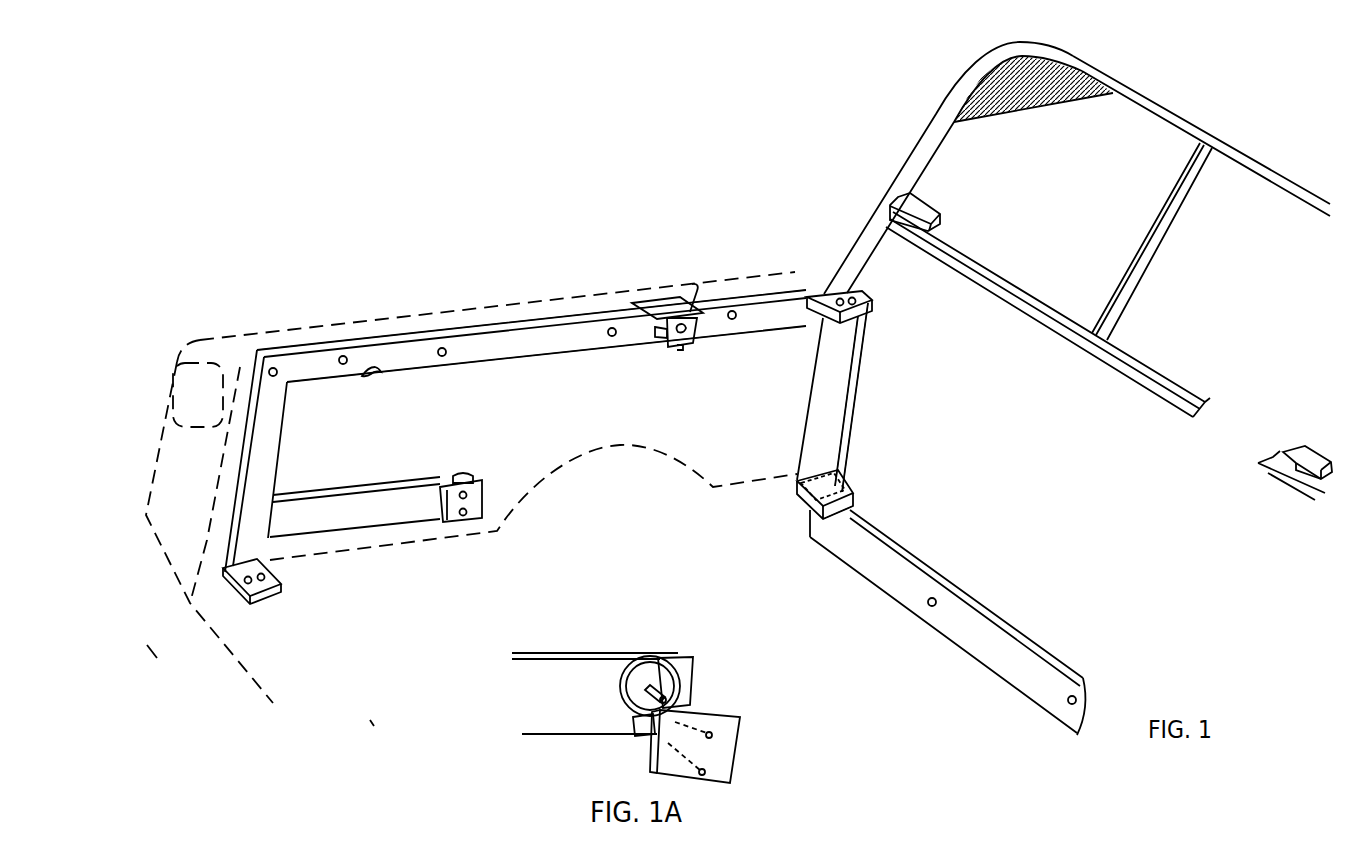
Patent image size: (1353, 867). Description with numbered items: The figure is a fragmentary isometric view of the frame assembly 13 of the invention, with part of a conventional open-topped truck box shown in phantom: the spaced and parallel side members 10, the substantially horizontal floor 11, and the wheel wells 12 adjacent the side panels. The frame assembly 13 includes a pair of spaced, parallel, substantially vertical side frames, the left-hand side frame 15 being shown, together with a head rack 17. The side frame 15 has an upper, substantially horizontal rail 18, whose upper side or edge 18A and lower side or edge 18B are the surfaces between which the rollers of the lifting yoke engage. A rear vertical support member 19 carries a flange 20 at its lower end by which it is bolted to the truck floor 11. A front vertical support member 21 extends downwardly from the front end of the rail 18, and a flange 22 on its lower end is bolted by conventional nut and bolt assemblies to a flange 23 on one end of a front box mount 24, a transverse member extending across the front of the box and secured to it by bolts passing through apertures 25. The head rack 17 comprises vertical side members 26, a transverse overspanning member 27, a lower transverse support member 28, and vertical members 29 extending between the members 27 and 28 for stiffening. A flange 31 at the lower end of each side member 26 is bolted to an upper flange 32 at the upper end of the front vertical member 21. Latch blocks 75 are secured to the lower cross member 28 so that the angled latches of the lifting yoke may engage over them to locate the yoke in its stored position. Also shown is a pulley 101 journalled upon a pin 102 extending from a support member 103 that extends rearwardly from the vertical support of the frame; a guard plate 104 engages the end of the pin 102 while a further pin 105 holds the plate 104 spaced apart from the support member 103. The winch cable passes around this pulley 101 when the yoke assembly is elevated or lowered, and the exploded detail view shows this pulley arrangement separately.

In FIG. 1, the side members 10 is at (358, 324).
In FIG. 1, the floor 11 is at (252, 647).
In FIG. 1, the wheel wells 12 is at (577, 457).
In FIG. 1, the frame assembly 13 is at (489, 350).
In FIG. 1, the side frame 15 is at (286, 458).
In FIG. 1, the head rack 17 is at (1132, 337).
In FIG. 1, the rail 18 is at (553, 338).
In FIG. 1, the upper edge of rail 18A is at (417, 333).
In FIG. 1, the lower edge of rail 18B is at (477, 364).
In FIG. 1, the rear vertical support member 19 is at (263, 432).
In FIG. 1, the flange 20 is at (280, 584).
In FIG. 1, the front vertical support member 21 is at (835, 362).
In FIG. 1, the flange 22 is at (845, 495).
In FIG. 1, the flange 23 is at (825, 503).
In FIG. 1, the front box mount 24 is at (915, 588).
In FIG. 1, the apertures 25 is at (932, 607).
In FIG. 1, the vertical side members 26 is at (923, 157).
In FIG. 1, the transverse overspanning member 27 is at (1146, 107).
In FIG. 1, the lower transverse support member 28 is at (1169, 381).
In FIG. 1, the vertical members 29 is at (1148, 244).
In FIG. 1, the flange 31 is at (817, 293).
In FIG. 1, the upper flange 32 is at (862, 345).
In FIG. 1, the latch blocks 75 is at (936, 215).
In FIG. 1, the pulley 101 is at (470, 477).
In FIG. 1A, the pulley 101 is at (652, 657).
In FIG. 1, the pin 102 is at (467, 495).
In FIG. 1, the support member 103 is at (342, 508).
In FIG. 1A, the support member 103 is at (568, 678).
In FIG. 1, the guard plate 104 is at (470, 507).
In FIG. 1A, the guard plate 104 is at (723, 748).
In FIG. 1, the pin 105 is at (463, 515).